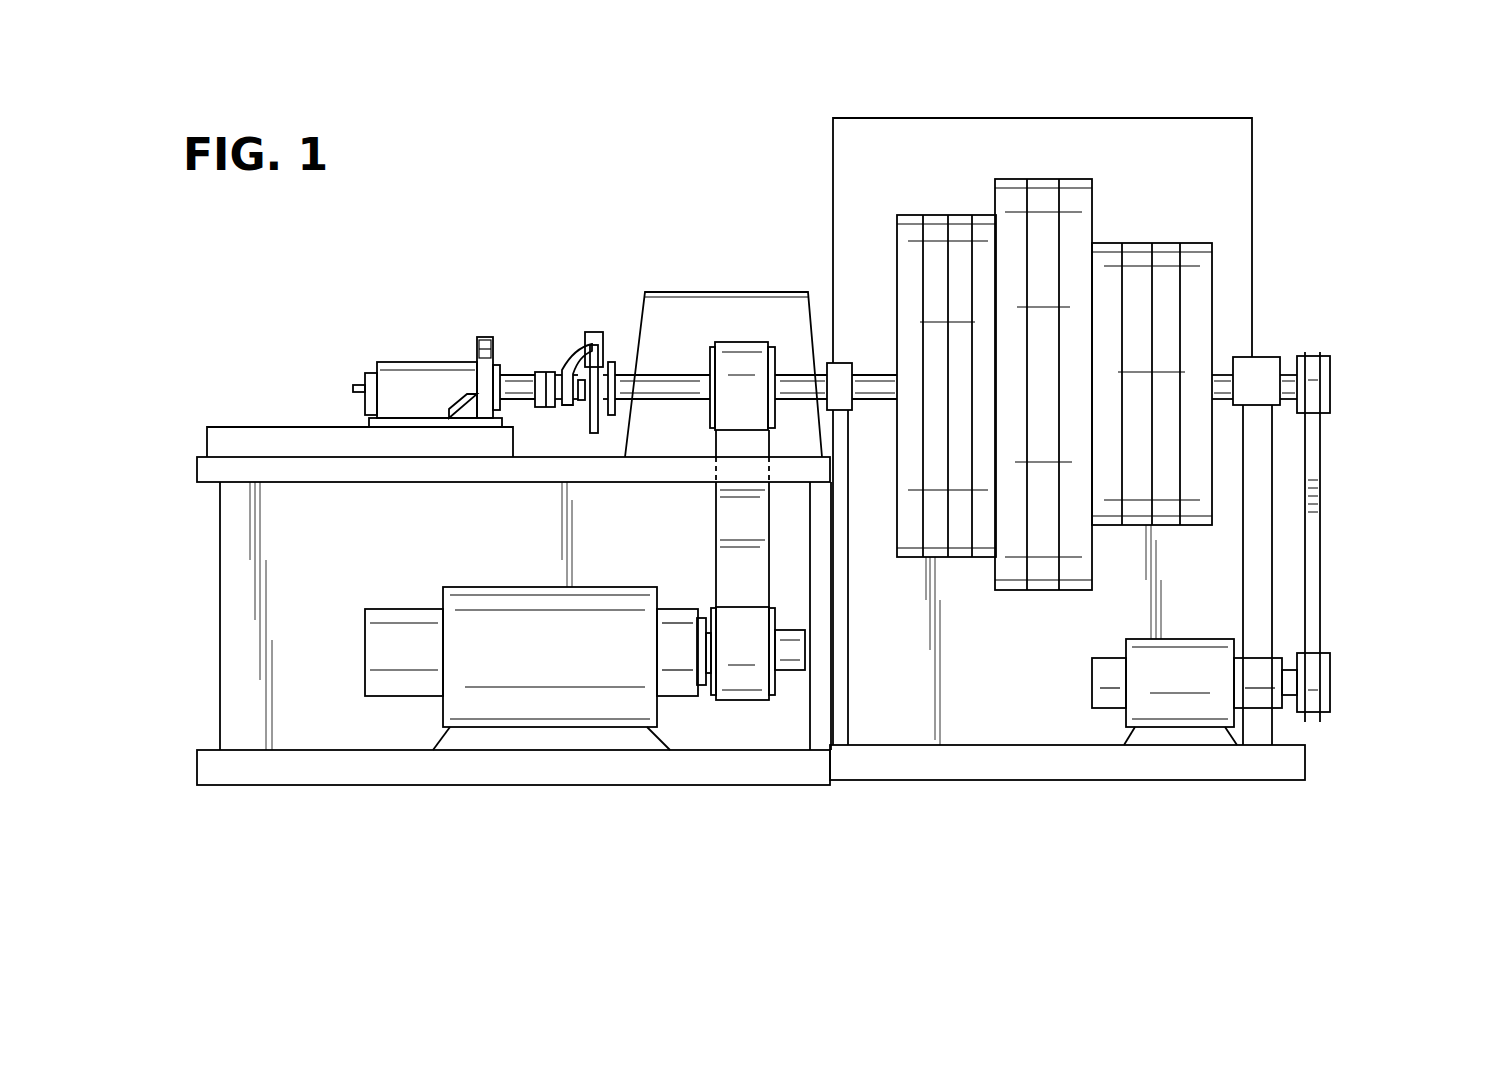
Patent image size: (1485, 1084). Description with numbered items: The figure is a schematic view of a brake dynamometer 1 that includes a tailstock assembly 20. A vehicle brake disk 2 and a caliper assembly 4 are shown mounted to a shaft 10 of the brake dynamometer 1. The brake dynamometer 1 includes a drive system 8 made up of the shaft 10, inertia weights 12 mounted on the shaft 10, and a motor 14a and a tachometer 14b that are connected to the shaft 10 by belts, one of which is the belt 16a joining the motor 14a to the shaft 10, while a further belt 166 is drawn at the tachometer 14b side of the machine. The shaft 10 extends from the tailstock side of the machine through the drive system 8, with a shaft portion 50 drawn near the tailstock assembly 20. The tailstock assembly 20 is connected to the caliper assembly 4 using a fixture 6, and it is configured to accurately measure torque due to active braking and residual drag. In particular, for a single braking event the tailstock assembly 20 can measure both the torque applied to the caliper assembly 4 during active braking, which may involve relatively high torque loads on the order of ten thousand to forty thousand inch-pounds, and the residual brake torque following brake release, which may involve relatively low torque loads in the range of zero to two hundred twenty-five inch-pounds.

The brake dynamometer 1 is at (606, 76).
The vehicle brake disk 2 is at (584, 420).
The caliper assembly 4 is at (595, 327).
The fixture 6 is at (569, 365).
The drive system 8 is at (1263, 105).
The shaft 10 is at (672, 388).
The inertia weights 12 is at (905, 210).
The motor 14a is at (566, 657).
The tachometer 14b is at (1196, 680).
The belt 16a is at (727, 532).
The tailstock assembly 20 is at (412, 385).
The coupling shaft 50 is at (523, 368).
The second belt 166 is at (1310, 523).